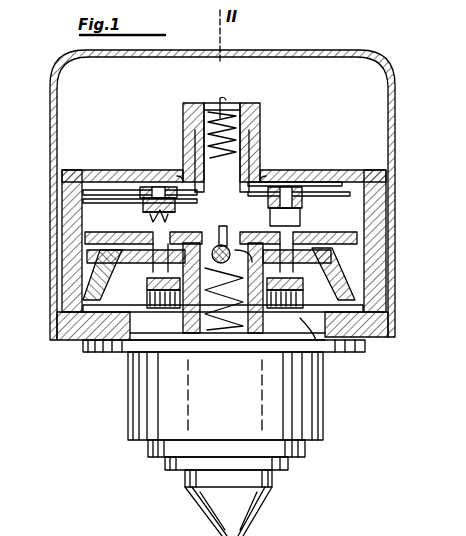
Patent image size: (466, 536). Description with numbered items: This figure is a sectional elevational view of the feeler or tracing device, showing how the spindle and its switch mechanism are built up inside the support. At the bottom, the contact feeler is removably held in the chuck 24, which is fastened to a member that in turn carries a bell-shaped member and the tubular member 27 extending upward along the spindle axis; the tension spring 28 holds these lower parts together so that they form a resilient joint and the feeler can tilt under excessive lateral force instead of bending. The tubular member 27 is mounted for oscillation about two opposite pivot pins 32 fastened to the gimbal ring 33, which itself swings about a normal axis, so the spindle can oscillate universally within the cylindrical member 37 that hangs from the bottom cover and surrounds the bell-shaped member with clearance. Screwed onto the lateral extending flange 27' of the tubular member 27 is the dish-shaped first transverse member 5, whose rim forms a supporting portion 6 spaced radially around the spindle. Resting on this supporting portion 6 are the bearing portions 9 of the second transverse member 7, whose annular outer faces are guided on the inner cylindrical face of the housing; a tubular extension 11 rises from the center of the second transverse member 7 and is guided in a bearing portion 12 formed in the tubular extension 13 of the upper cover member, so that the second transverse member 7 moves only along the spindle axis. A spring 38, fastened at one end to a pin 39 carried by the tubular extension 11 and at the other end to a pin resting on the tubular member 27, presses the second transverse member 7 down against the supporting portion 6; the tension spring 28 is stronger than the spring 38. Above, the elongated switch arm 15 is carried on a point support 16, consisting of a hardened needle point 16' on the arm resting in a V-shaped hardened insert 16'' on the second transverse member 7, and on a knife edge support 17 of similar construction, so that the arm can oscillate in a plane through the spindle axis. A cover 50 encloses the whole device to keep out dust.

The cover 50 is at (395, 128).
The bearing portions 9 is at (83, 280).
The elongated switch arm 15 is at (266, 180).
The bearing portion 12 is at (185, 121).
The tubular extension 11 is at (262, 120).
The tubular extension 13 is at (185, 150).
The spring 38 is at (218, 104).
The pin 39 is at (232, 108).
The point support 16 is at (140, 204).
The hardened needle point 16' is at (173, 220).
The V-shaped hardened insert 16'' is at (141, 224).
The knife edge support 17 is at (306, 215).
The second transverse member 7 is at (360, 240).
The first transverse member 5 is at (332, 272).
The supporting portion 6 is at (363, 306).
The tension spring 28 is at (240, 324).
The tubular member 27 is at (133, 349).
The lateral extending flange 27' is at (298, 293).
The pivot pins 32 is at (124, 352).
The gimbal ring 33 is at (300, 320).
The cylindrical member 37 is at (325, 413).
The chuck 24 is at (253, 512).